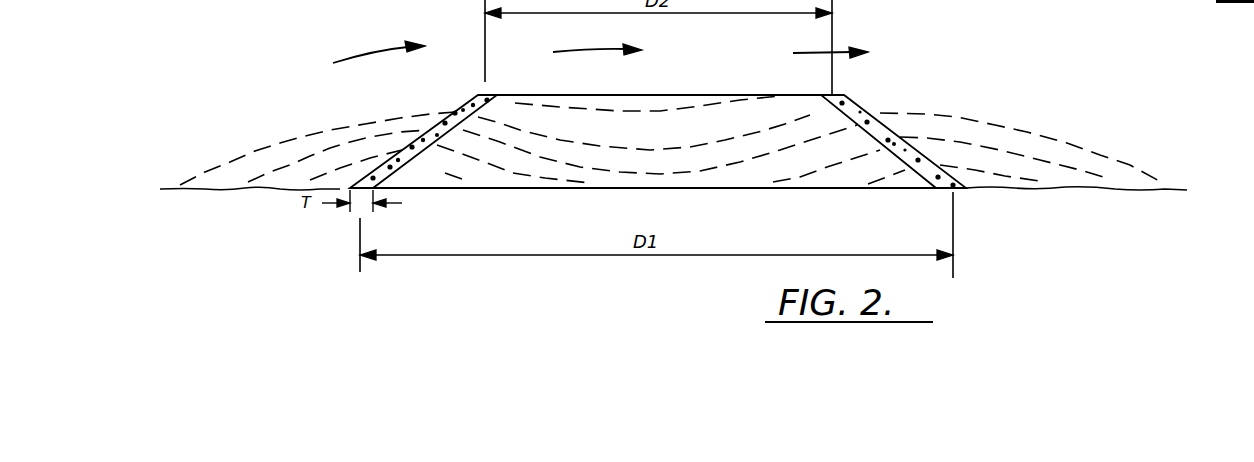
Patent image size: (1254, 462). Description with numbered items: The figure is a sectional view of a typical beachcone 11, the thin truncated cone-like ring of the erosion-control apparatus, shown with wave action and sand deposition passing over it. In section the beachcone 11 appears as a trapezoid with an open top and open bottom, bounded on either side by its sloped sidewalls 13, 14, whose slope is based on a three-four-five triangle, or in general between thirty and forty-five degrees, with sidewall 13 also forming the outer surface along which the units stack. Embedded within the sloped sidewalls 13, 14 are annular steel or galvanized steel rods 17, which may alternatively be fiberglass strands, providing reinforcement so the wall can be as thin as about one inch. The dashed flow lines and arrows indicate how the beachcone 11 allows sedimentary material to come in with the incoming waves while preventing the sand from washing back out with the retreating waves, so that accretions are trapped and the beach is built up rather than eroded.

The truncated cone-like ring 11 is at (658, 134).
The sidewall 13 is at (455, 111).
The sidewall 14 is at (485, 105).
The reinforcing rods 17 is at (407, 152).